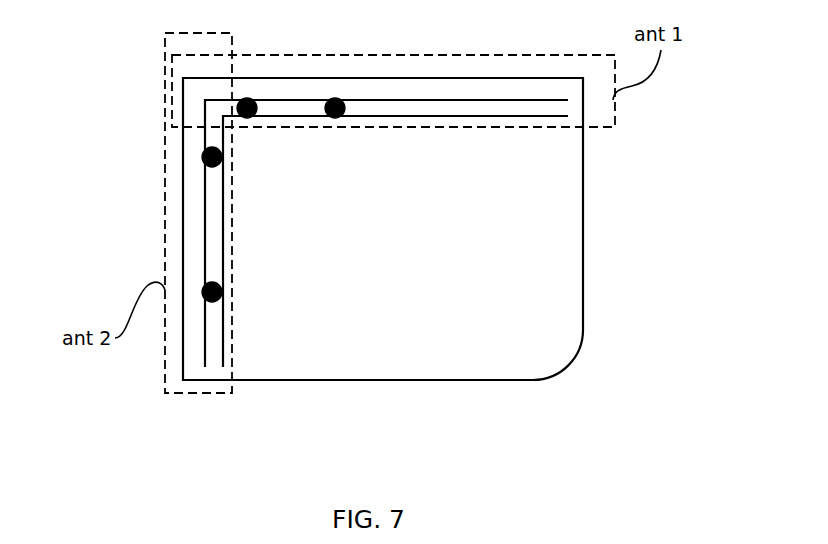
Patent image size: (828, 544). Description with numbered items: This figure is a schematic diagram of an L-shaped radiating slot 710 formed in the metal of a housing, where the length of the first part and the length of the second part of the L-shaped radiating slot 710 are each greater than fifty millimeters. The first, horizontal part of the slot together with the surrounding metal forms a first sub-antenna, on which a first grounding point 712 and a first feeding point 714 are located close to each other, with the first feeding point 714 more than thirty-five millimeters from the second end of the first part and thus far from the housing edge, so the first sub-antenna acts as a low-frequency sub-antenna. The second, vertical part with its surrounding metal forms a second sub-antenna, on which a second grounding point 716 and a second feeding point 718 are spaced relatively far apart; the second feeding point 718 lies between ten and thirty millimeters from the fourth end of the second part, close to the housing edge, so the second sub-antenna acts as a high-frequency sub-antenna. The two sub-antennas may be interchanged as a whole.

The L-shaped radiating slot 710 is at (213, 343).
The first grounding point 712 is at (255, 113).
The first feeding point 714 is at (343, 113).
The second grounding point 716 is at (221, 159).
The second feeding point 718 is at (221, 294).